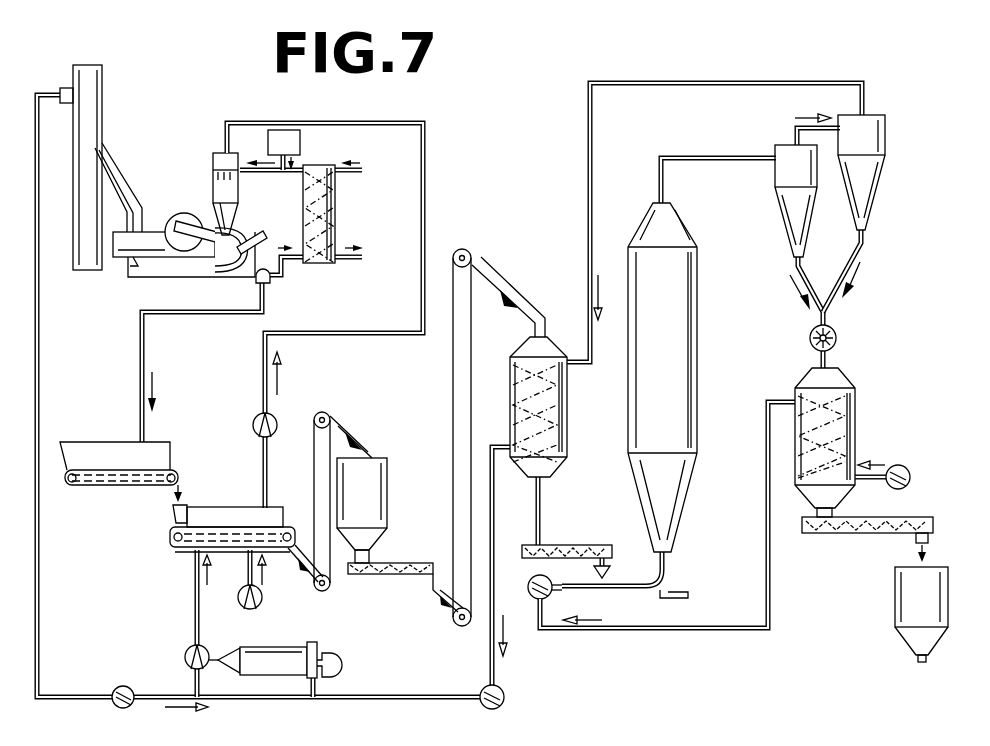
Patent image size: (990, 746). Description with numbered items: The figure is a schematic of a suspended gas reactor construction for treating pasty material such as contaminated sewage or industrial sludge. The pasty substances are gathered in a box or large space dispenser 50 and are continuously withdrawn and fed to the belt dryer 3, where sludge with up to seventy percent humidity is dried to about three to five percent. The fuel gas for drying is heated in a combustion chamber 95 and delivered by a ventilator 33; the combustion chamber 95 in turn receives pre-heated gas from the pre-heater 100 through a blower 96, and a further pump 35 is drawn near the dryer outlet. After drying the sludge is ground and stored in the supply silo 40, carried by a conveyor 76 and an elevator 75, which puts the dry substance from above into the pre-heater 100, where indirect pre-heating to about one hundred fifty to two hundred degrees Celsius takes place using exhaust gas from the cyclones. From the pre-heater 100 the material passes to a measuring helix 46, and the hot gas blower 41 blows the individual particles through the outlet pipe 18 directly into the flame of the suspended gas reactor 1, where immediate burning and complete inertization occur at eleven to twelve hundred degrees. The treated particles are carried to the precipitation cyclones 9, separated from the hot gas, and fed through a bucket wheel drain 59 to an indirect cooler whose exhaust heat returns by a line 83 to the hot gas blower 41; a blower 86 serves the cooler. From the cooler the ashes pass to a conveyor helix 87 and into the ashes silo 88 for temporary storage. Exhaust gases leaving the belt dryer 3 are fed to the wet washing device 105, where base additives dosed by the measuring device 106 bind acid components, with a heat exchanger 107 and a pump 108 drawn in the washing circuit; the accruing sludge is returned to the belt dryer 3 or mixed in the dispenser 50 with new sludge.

The suspended gas reactor 1 is at (688, 334).
The belt dryer 3 is at (183, 552).
The precipitation cyclones 9 is at (858, 196).
The outlet elbow pipe 18 is at (668, 577).
The ventilator 33 is at (186, 652).
The pump 35 is at (263, 600).
The supply silo 40 is at (385, 470).
The hot gas blower 41 is at (529, 586).
The measuring helix 46 is at (591, 544).
The large space dispenser 50 is at (112, 484).
The bucket wheel drain 59 is at (837, 336).
The elevator 75 is at (452, 400).
The conveyor 76 is at (316, 463).
The gas return line 83 is at (725, 630).
The blower 86 is at (900, 465).
The conveyor helix 87 is at (925, 517).
The ashes silo 88 is at (950, 577).
The combustion chamber 95 is at (282, 655).
The blower 96 is at (505, 695).
The pre-heater 100 is at (567, 411).
The wet washing device 105 is at (213, 178).
The measuring device 106 is at (300, 143).
The heat exchanger 107 is at (336, 196).
The pump 108 is at (276, 415).